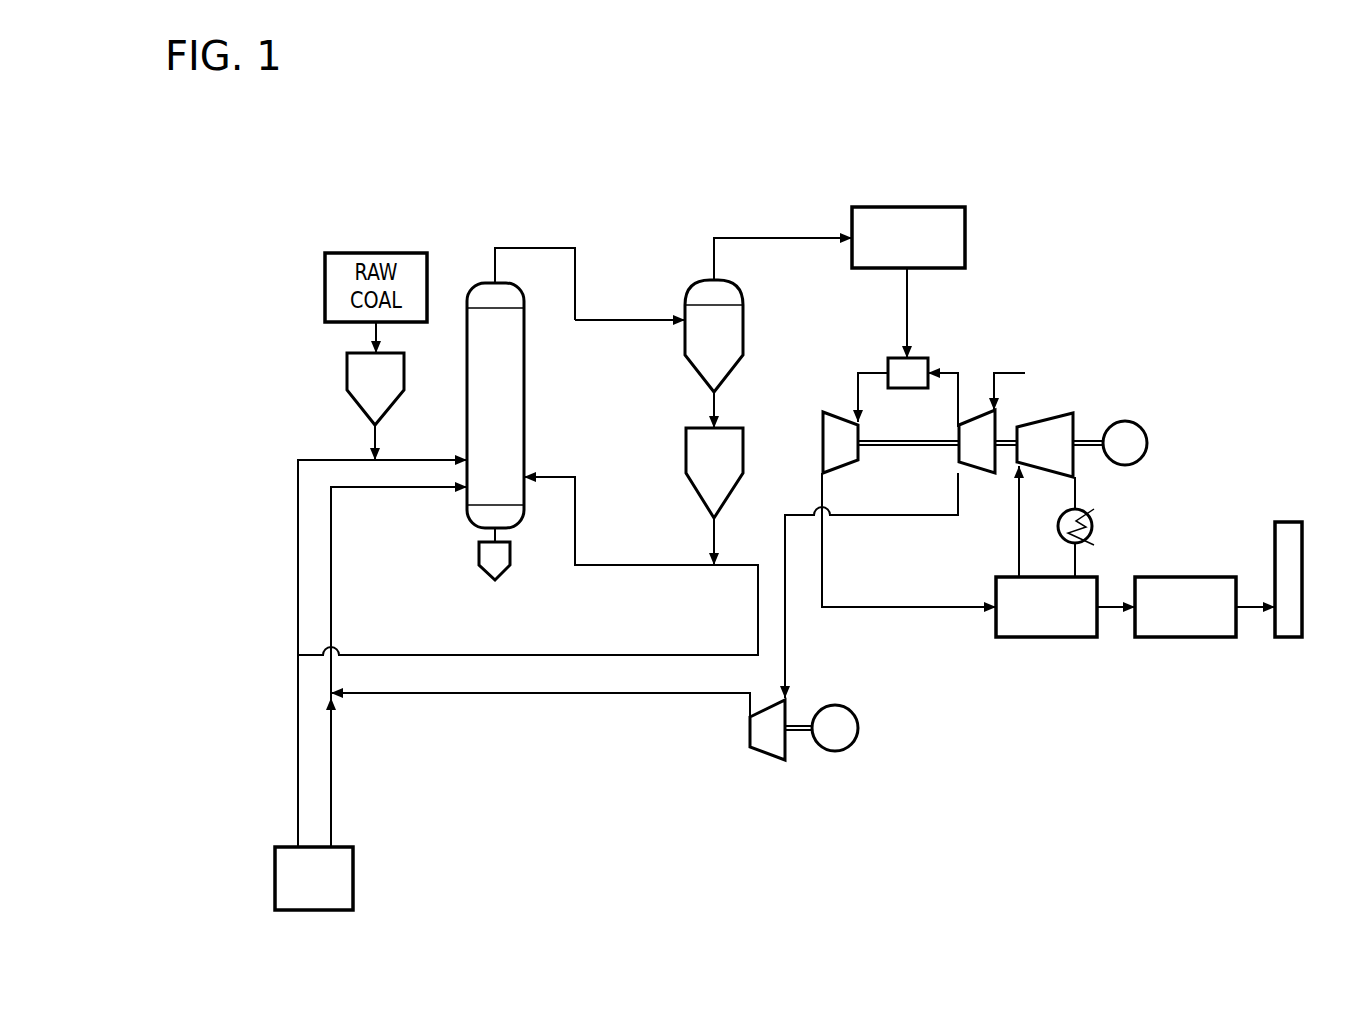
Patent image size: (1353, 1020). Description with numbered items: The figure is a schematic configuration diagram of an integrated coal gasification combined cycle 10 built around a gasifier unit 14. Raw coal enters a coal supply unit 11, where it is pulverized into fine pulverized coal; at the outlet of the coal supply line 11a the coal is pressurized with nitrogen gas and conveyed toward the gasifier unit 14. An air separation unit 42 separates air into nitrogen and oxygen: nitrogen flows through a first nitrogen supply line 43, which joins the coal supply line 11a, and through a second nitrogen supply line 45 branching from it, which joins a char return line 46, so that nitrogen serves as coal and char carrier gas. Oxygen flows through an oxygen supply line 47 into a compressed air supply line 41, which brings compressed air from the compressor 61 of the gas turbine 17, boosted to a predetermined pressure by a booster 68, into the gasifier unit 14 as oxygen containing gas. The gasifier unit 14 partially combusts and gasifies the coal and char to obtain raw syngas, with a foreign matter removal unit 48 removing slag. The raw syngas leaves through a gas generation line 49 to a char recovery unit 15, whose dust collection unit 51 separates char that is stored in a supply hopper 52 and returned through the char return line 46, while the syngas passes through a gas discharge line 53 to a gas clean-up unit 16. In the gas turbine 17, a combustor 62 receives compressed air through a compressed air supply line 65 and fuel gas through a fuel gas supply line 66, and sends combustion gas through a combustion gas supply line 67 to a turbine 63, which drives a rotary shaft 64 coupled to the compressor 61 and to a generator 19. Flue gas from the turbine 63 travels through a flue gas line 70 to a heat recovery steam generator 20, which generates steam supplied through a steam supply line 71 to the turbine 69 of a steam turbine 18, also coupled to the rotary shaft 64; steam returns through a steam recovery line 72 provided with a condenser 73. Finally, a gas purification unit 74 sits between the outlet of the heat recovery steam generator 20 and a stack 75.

The integrated coal gasification combined cycle 10 is at (667, 128).
The coal supply unit 11 is at (345, 367).
The coal supply line 11a is at (372, 436).
The gasifier unit 14 is at (467, 278).
The char recovery unit 15 is at (700, 279).
The gas clean-up unit 16 is at (907, 206).
The gas turbine 17 is at (826, 378).
The steam turbine 18 is at (1024, 400).
The generator 19 is at (1143, 424).
The heat recovery steam generator 20 is at (1064, 639).
The compressed air supply line 41 is at (787, 640).
The air separation unit 42 is at (273, 880).
The first nitrogen supply line 43 is at (296, 743).
The second nitrogen supply line 45 is at (392, 652).
The char return line 46 is at (712, 546).
The oxygen supply line 47 is at (333, 743).
The foreign matter removal unit 48 is at (477, 549).
The gas generation line 49 is at (535, 246).
The dust collection unit 51 is at (684, 345).
The supply hopper 52 is at (684, 455).
The gas discharge line 53 is at (758, 236).
The compressor 61 is at (977, 476).
The combustor 62 is at (914, 357).
The turbine 63 is at (821, 426).
The rotary shaft 64 is at (905, 448).
The compressed air supply line 65 is at (960, 392).
The fuel gas supply line 66 is at (904, 292).
The combustion gas supply line 67 is at (862, 372).
The booster 68 is at (760, 765).
The turbine 69 is at (1062, 412).
The flue gas line 70 is at (905, 612).
The steam supply line 71 is at (1017, 557).
The steam recovery line 72 is at (1077, 557).
The condenser 73 is at (1092, 512).
The gas purification unit 74 is at (1185, 575).
The stack 75 is at (1290, 520).